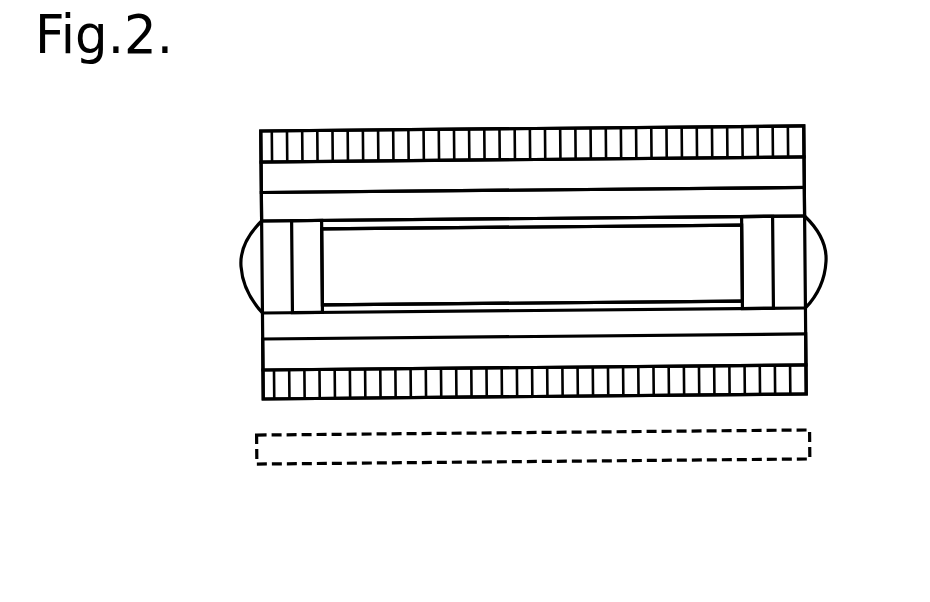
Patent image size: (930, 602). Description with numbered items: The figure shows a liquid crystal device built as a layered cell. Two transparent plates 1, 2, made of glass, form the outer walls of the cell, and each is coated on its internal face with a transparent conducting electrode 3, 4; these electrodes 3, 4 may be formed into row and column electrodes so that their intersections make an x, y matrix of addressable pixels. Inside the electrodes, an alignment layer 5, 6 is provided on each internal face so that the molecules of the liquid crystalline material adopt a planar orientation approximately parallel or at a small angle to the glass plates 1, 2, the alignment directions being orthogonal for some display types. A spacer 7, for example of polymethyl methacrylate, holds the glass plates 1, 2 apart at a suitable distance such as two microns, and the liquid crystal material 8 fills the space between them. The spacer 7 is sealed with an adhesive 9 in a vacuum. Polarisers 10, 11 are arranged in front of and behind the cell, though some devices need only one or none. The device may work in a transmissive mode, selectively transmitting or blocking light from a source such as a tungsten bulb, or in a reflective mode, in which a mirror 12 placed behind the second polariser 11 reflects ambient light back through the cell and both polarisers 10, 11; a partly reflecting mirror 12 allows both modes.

The transparent plate 1 is at (337, 170).
The transparent plate 2 is at (277, 353).
The transparent conducting electrode 3 is at (588, 203).
The transparent conducting electrode 4 is at (488, 322).
The alignment layer 5 is at (727, 213).
The alignment layer 6 is at (725, 305).
The spacer 7 is at (757, 260).
The liquid crystal material 8 is at (333, 248).
The adhesive 9 is at (262, 278).
The polariser 10 is at (283, 147).
The polariser 11 is at (275, 387).
The mirror 12 is at (468, 450).